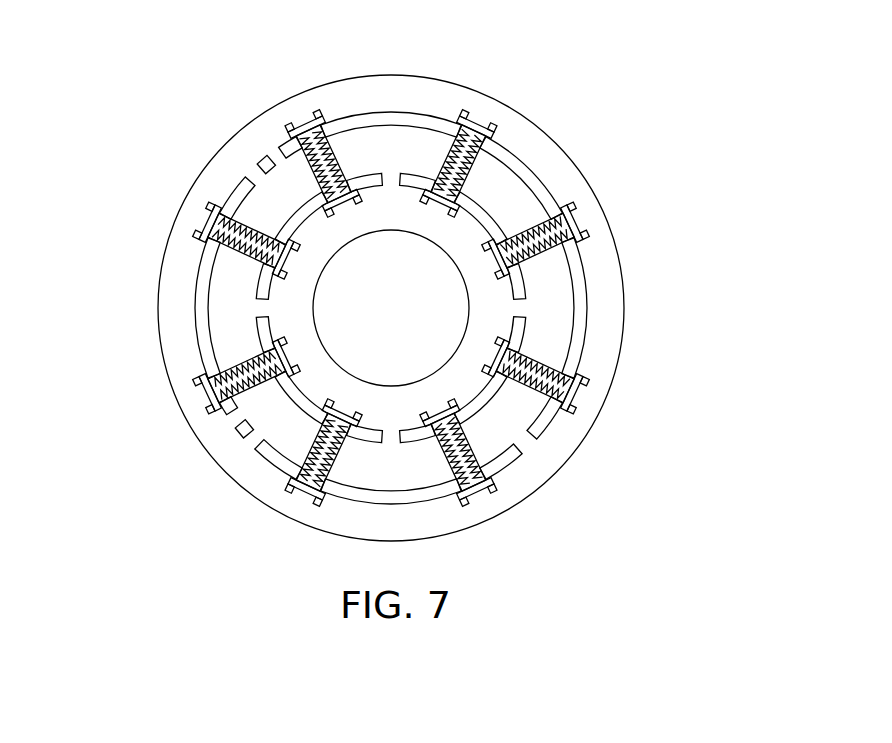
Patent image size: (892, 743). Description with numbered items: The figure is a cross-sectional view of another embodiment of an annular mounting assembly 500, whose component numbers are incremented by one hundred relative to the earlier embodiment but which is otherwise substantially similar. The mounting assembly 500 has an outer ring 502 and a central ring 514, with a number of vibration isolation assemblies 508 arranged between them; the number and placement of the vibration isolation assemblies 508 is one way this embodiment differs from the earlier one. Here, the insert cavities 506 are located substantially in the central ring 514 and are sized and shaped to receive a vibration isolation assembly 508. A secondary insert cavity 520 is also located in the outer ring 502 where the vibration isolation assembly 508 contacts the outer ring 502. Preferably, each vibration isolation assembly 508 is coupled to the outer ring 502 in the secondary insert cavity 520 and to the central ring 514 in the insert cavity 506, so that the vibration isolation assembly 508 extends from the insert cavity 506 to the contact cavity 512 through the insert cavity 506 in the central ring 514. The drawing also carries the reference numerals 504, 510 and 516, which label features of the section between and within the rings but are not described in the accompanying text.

The mounting assembly 500 is at (627, 130).
The outer ring 502 is at (160, 305).
The outer ring segments 504 is at (386, 305).
The insert cavity 506 is at (305, 160).
The vibration isolation assembly 508 is at (391, 271).
The central bore 510 is at (328, 252).
The contact cavity 512 is at (390, 287).
The central ring 514 is at (262, 413).
The gap 516 is at (392, 184).
The secondary insert cavity 520 is at (318, 192).